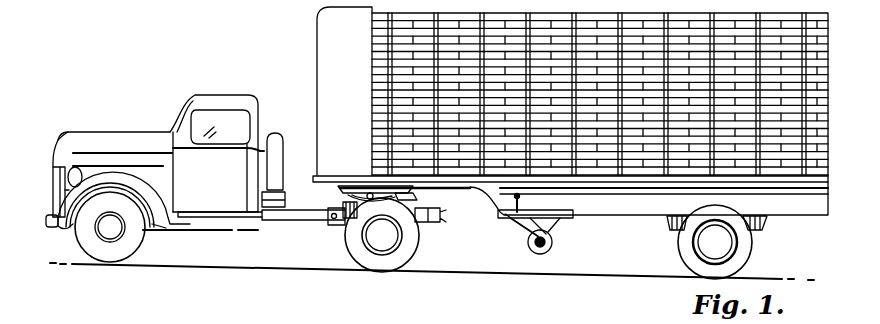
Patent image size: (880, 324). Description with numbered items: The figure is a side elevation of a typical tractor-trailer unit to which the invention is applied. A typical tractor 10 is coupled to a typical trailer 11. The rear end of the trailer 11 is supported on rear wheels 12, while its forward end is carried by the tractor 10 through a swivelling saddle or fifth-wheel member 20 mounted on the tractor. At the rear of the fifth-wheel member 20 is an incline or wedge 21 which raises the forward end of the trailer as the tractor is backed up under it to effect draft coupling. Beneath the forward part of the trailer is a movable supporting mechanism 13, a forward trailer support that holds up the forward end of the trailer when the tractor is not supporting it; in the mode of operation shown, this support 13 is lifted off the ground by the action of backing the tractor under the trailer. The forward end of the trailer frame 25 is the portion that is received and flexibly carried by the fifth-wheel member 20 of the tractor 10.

The tractor 10 is at (168, 119).
The trailer 11 is at (640, 210).
The rear wheels 12 is at (752, 247).
The movable supporting mechanism 13 is at (507, 237).
The fifth-wheel member 20 is at (350, 195).
The incline or wedge 21 is at (407, 197).
The trailer frame 25 is at (345, 185).